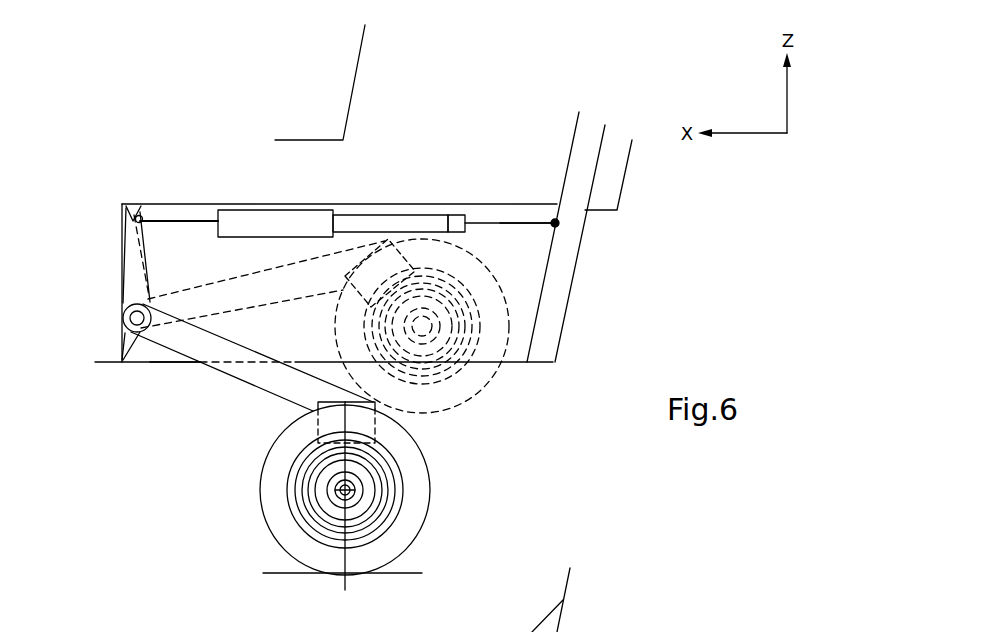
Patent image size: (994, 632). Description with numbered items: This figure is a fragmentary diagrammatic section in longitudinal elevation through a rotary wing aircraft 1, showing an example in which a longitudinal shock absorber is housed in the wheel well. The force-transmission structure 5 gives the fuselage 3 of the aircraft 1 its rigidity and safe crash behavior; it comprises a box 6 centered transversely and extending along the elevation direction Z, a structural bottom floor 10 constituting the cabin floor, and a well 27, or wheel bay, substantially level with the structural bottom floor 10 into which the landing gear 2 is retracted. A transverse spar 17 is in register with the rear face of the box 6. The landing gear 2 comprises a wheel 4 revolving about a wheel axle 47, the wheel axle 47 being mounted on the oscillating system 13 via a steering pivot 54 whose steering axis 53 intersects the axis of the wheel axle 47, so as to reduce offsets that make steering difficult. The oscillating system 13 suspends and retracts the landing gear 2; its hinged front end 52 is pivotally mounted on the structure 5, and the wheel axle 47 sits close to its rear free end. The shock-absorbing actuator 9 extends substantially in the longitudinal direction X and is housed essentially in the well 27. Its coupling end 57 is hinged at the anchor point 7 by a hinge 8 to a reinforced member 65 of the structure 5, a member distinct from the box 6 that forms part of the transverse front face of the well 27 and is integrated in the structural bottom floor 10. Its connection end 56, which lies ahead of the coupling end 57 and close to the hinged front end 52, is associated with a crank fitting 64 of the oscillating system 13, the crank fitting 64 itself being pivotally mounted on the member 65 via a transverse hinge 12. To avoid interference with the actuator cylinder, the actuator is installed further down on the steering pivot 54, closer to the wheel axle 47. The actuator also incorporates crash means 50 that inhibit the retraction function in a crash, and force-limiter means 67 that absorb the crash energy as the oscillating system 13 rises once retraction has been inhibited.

The rotary wing aircraft 1 is at (175, 138).
The landing gear 2 is at (440, 454).
The fuselage 3 is at (106, 364).
The wheel 4 is at (278, 533).
The force-transmission structure 5 is at (352, 57).
The box 6 is at (452, 81).
The anchor point 7 is at (538, 195).
The hinge 8 is at (553, 221).
The shock-absorbing actuator 9 is at (347, 200).
The structural bottom floor 10 is at (347, 186).
The transverse hinge 12 is at (124, 318).
The oscillating system 13 is at (219, 377).
The transverse spar 17 is at (576, 130).
The well 27 is at (518, 297).
The wheel axle 47 is at (352, 493).
The crash means 50 is at (347, 200).
The hinged front end 52 is at (175, 372).
The steering axis 53 is at (347, 556).
The steering pivot 54 is at (355, 424).
The connection end 56 is at (140, 210).
The coupling end 57 is at (533, 230).
The crank fitting 64 is at (135, 232).
The reinforced member 65 is at (130, 337).
The force-limiter means 67 is at (237, 217).